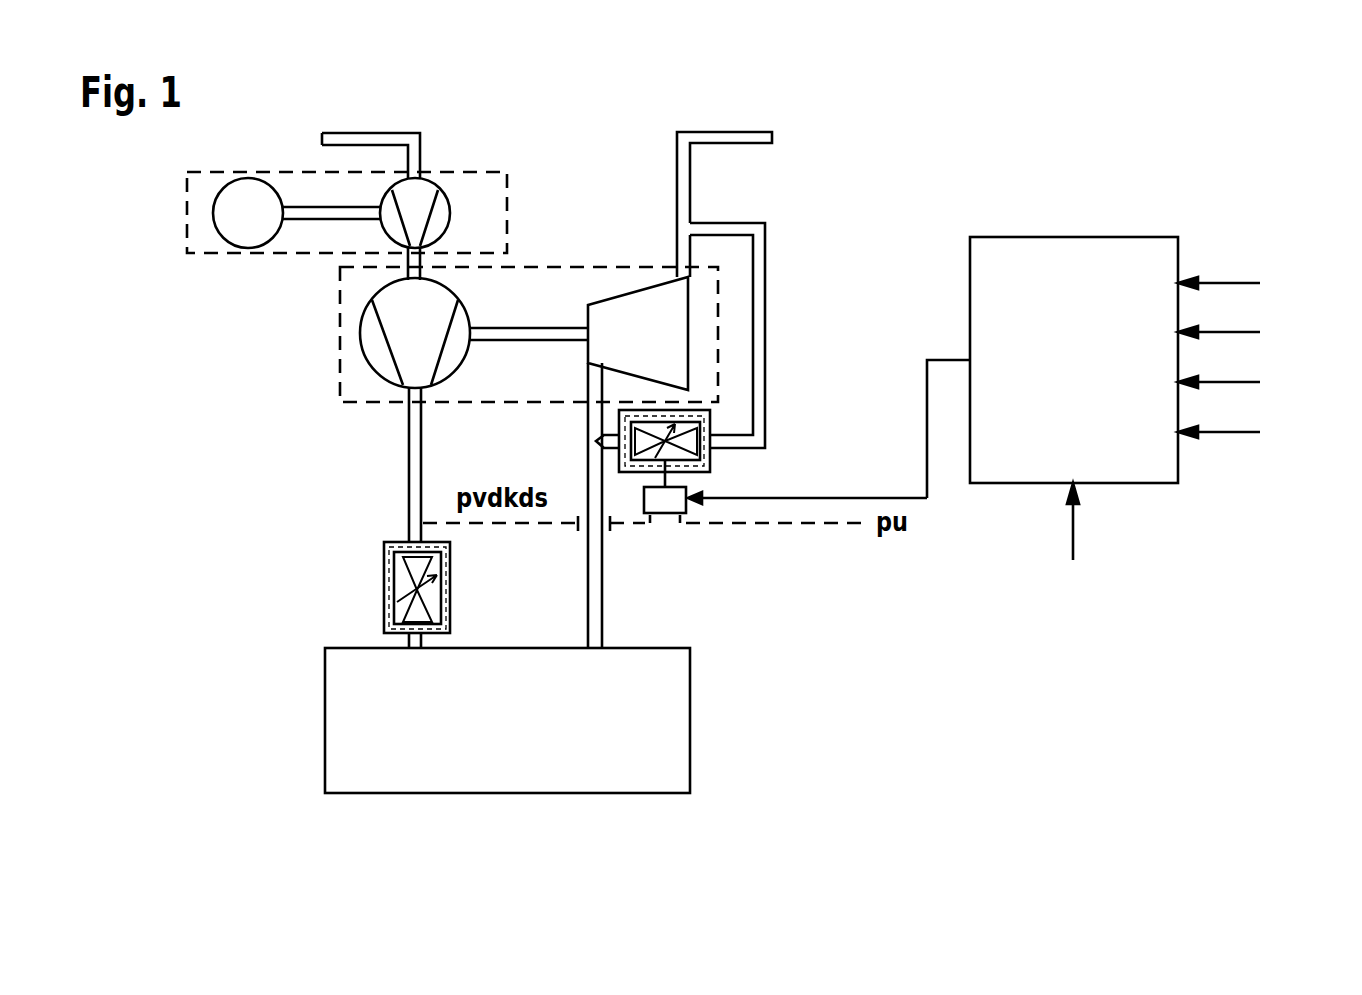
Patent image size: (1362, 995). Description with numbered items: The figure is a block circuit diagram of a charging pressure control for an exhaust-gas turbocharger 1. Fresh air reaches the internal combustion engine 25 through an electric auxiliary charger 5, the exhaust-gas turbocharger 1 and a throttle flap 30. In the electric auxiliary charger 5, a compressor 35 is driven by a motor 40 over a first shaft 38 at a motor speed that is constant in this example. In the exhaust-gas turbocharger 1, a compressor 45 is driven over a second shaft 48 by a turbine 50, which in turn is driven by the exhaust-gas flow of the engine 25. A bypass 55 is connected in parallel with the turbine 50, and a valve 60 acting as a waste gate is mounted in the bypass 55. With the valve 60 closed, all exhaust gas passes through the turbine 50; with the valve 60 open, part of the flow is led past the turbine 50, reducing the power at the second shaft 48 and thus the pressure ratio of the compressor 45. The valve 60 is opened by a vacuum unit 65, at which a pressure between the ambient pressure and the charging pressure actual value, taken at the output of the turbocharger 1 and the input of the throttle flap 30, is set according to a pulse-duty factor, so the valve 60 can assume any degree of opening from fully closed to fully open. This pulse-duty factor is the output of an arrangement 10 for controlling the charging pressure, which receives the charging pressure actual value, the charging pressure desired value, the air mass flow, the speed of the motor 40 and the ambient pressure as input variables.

The exhaust-gas turbocharger 1 is at (566, 286).
The electric auxiliary charger 5 is at (488, 190).
The arrangement for controlling charging pressure 10 is at (1070, 266).
The internal combustion engine 25 is at (672, 718).
The throttle flap 30 is at (450, 608).
The compressor of the electric auxiliary charger 35 is at (418, 196).
The first shaft 38 is at (325, 222).
The motor 40 is at (247, 190).
The compressor of the exhaust-gas turbocharger 45 is at (408, 337).
The second shaft 48 is at (525, 343).
The turbine 50 is at (630, 318).
The bypass 55 is at (766, 350).
The valve 60 is at (692, 435).
The vacuum unit 65 is at (665, 515).